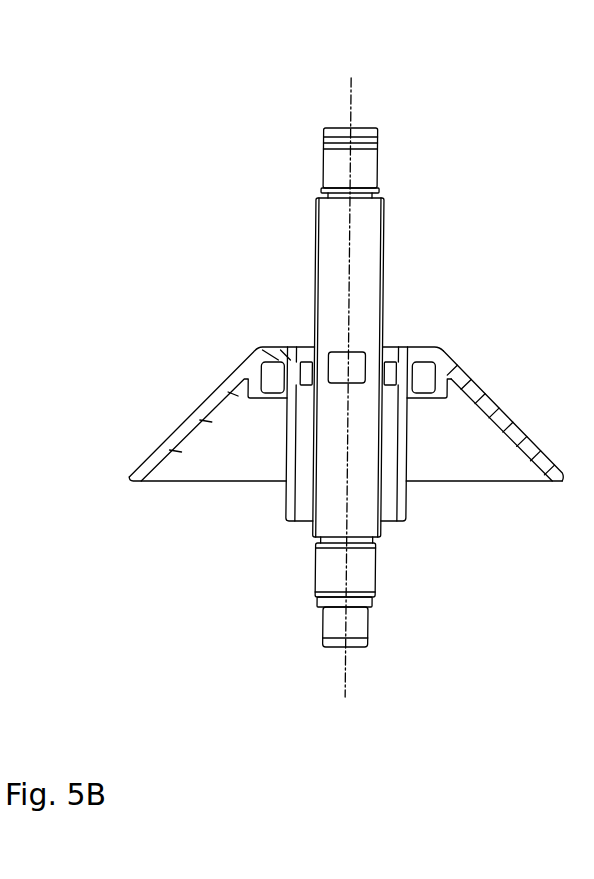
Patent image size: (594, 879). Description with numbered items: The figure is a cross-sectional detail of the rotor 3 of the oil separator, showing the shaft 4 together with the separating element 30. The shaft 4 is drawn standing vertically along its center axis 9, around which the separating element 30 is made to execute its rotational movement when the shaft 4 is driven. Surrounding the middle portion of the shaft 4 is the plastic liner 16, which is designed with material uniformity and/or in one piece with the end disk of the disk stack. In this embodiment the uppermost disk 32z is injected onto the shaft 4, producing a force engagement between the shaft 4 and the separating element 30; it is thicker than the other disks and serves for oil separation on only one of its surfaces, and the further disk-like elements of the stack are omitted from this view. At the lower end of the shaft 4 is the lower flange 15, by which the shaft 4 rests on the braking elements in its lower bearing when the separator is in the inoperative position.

The rotor 3 is at (203, 207).
The center axis 9 is at (348, 99).
The shaft 4 is at (346, 245).
The lower flange 15 is at (374, 602).
The plastic liner 16 is at (404, 485).
The oil separating element 30 is at (203, 402).
The uppermost disk 32z is at (468, 388).